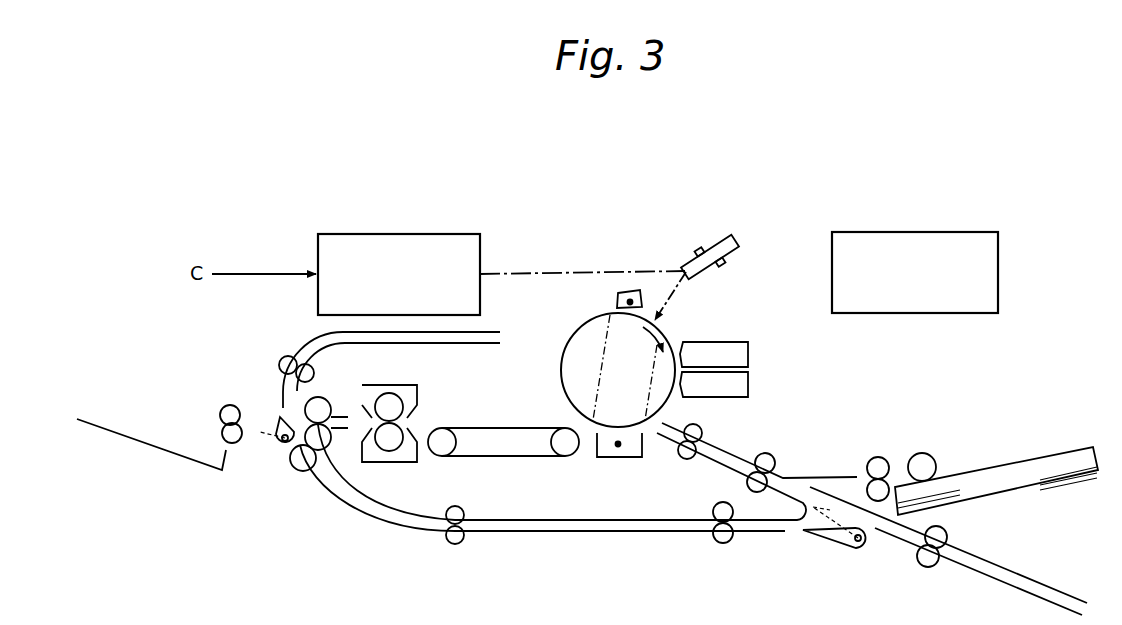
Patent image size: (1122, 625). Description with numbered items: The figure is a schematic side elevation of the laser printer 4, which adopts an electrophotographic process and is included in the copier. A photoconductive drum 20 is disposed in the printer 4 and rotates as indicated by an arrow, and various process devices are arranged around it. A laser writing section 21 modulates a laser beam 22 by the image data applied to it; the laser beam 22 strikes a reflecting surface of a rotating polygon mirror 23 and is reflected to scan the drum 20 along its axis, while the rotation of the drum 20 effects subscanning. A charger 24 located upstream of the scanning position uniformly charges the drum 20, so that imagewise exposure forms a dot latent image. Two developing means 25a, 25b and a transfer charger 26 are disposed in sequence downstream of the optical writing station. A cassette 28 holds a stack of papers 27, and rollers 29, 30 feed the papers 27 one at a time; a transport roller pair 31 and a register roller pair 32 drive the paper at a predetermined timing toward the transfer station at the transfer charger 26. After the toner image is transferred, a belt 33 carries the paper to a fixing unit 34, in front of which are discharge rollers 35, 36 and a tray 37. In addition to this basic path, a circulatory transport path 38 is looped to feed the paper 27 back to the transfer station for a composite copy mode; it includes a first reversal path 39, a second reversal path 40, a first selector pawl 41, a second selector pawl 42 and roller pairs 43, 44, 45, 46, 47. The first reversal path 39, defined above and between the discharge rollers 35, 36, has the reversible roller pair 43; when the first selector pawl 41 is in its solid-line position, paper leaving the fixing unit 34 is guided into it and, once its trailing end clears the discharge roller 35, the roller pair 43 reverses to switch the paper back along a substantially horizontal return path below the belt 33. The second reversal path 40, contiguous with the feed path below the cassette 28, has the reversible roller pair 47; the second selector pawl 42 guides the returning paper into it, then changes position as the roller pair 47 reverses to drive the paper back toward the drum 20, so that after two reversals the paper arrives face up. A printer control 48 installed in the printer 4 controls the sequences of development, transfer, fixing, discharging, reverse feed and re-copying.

The laser printer 4 is at (340, 186).
The photoconductive drum 20 is at (572, 352).
The laser writing section 21 is at (436, 234).
The laser beam 22 is at (531, 270).
The polygon mirror 23 is at (714, 242).
The charger 24 is at (633, 291).
The developing means 25a is at (748, 350).
The developing means 25b is at (749, 383).
The transfer charger 26 is at (613, 458).
The papers 27 is at (1005, 466).
The cassette 28 is at (1060, 488).
The roller 29 is at (925, 462).
The roller 30 is at (878, 462).
The transport roller pair 31 is at (776, 460).
The register roller pair 32 is at (703, 430).
The belt 33 is at (519, 456).
The fixing unit 34 is at (392, 445).
The discharge roller 35 is at (340, 470).
The discharge roller 36 is at (224, 405).
The tray 37 is at (122, 428).
The circulatory transport path 38 is at (652, 533).
The first reversal path 39 is at (470, 345).
The second reversal path 40 is at (1000, 580).
The first selector pawl 41 is at (262, 440).
The second selector pawl 42 is at (835, 540).
The roller pair 43 is at (284, 358).
The roller pair 44 is at (297, 462).
The roller pair 45 is at (455, 542).
The roller pair 46 is at (723, 543).
The roller pair 47 is at (925, 560).
The printer control 48 is at (905, 232).